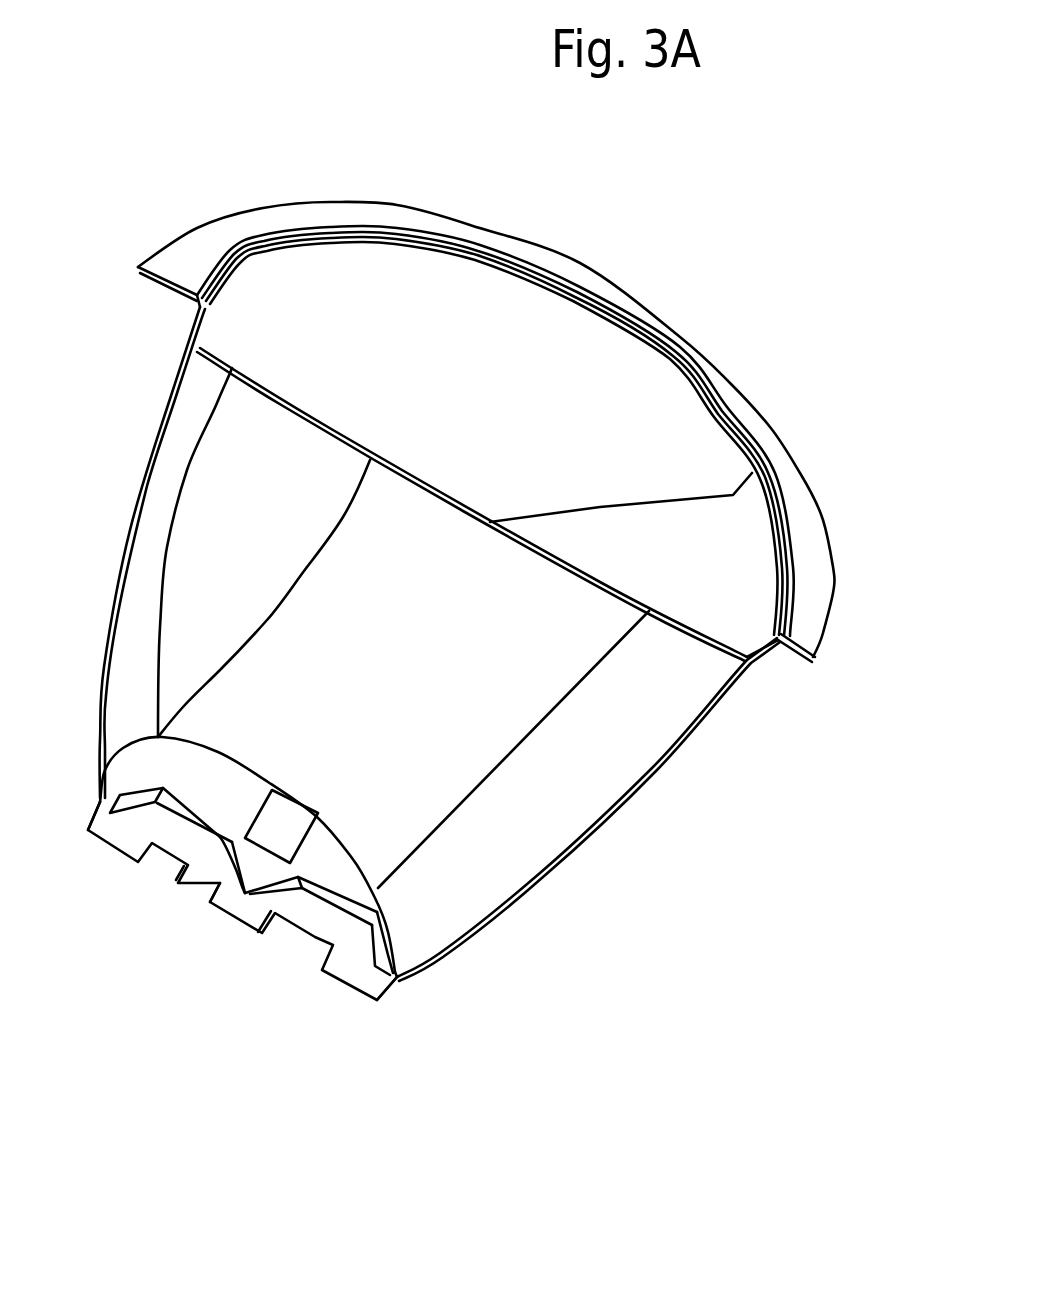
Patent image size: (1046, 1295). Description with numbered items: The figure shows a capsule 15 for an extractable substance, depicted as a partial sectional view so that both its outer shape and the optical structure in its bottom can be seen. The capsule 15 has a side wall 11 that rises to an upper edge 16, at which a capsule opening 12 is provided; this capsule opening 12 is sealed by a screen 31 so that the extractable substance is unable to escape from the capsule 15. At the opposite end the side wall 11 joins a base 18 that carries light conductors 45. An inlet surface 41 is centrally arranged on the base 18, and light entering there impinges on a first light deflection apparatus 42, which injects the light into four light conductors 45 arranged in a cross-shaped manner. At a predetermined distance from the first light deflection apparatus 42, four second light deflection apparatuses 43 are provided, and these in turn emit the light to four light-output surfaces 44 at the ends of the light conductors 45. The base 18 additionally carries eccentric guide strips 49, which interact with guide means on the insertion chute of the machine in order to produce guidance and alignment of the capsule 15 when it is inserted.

The capsule 15 is at (150, 222).
The upper edge 16 is at (258, 228).
The screen 31 is at (298, 390).
The capsule opening 12 is at (615, 428).
The side wall 11 is at (657, 768).
The base 18 is at (428, 1027).
The inlet surface 41 is at (233, 907).
The first light deflection apparatus 42 is at (245, 890).
The second light deflection apparatus 43 is at (135, 800).
The light-output surface 44 is at (102, 833).
The light conductor 45 is at (180, 833).
The eccentric guide strip 49 is at (178, 835).